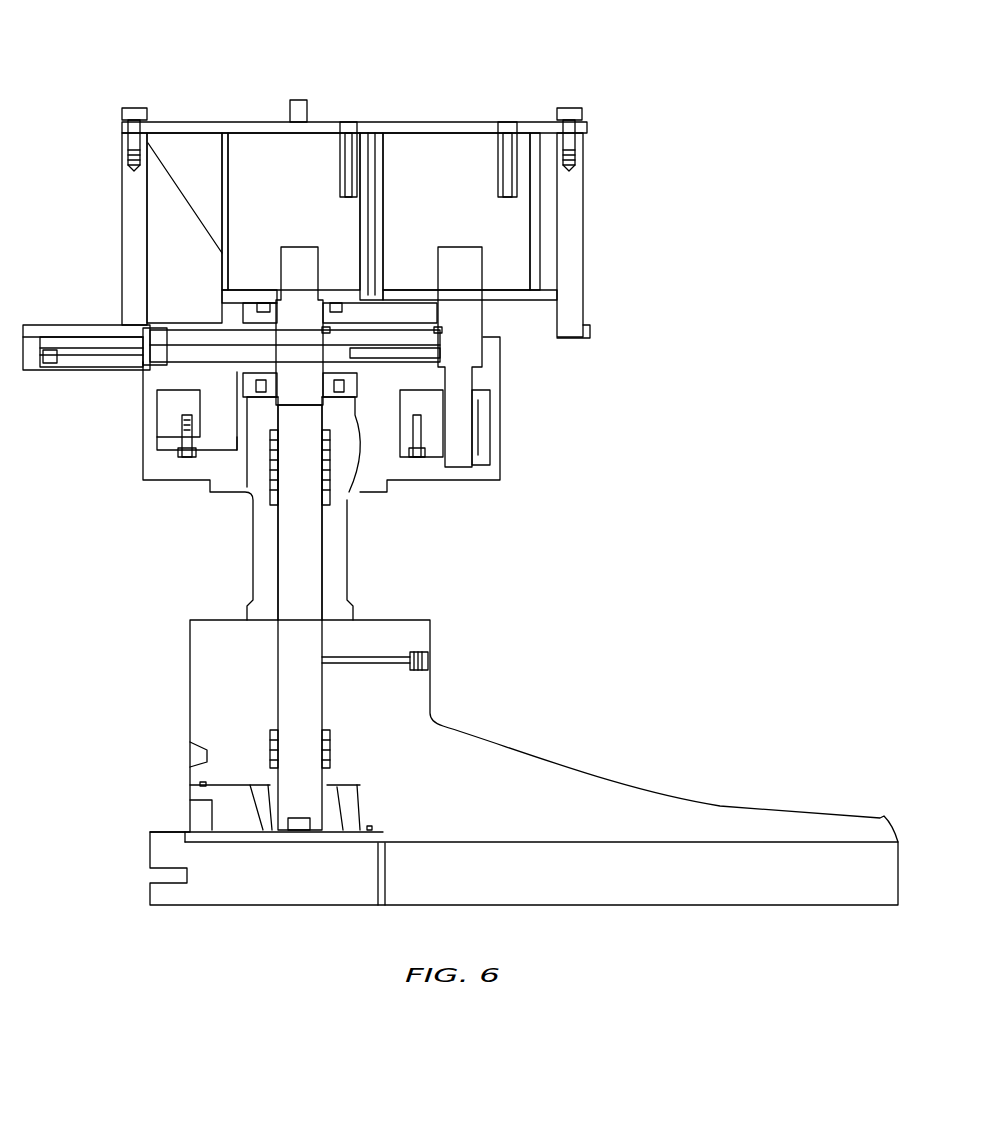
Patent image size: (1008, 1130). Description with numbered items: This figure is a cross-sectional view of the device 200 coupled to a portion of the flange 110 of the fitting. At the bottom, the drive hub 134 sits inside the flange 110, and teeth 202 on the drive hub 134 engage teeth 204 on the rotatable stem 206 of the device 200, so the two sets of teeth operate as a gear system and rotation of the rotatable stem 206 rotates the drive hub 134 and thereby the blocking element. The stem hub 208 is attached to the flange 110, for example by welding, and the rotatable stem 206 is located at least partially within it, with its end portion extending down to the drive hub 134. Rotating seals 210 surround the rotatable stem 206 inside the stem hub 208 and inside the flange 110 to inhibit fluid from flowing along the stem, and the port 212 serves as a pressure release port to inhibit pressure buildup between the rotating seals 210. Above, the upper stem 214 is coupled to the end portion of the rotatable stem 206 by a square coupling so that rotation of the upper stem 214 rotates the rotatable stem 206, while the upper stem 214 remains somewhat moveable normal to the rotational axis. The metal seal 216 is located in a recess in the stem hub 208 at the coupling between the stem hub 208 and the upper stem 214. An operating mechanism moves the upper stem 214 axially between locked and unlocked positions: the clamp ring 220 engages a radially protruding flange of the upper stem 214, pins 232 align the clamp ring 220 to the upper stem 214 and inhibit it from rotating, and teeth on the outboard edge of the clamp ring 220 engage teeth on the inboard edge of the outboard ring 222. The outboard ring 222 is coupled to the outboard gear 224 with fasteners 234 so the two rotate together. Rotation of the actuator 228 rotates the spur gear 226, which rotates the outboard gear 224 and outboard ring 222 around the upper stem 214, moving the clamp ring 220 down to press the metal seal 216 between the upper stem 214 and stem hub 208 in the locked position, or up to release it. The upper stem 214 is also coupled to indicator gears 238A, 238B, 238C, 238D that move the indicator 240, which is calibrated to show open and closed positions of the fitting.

The device 200 is at (207, 82).
The indicator 240 is at (300, 100).
The actuator 228 is at (462, 252).
The indicator gear 238B is at (400, 345).
The indicator gear 238A is at (243, 318).
The indicator gear 238D is at (122, 338).
The indicator gear 238C is at (57, 355).
The outboard ring 222 is at (218, 440).
The outboard gear 224 is at (165, 420).
The fasteners 234 is at (185, 460).
The spur gear 226 is at (478, 415).
The pins 232 is at (237, 380).
The clamp ring 220 is at (352, 407).
The upper stem 214 is at (306, 250).
The rotatable stem 206 is at (313, 568).
The metal seal 216 is at (345, 485).
The stem hub 208 is at (338, 612).
The rotating seals 210 is at (325, 497).
The flange 110 is at (550, 765).
The drive hub 134 is at (267, 868).
The port 212 is at (432, 660).
The teeth 202 is at (230, 798).
The teeth 204 is at (345, 812).